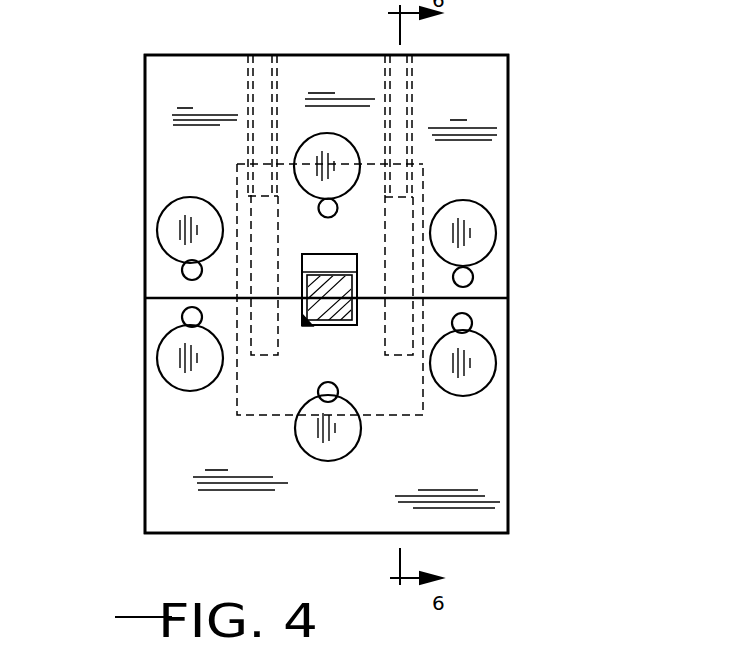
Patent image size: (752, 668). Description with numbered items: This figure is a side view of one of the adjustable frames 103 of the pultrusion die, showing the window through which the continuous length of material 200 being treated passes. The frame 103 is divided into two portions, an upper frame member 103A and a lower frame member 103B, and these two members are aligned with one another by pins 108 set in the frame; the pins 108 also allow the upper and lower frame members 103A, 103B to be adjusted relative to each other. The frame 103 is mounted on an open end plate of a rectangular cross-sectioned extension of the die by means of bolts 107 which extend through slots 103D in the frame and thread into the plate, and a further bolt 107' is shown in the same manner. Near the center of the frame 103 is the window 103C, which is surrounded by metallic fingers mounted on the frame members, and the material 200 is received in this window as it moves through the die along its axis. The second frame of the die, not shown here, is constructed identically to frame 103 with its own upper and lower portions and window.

The adjustable frame 103 is at (546, 124).
The upper frame member 103A is at (478, 82).
The lower frame member 103B is at (483, 430).
The window 103C is at (367, 240).
The slots 103D is at (318, 209).
The bolts 107 is at (335, 285).
The roller 107' is at (527, 218).
The pins 108 is at (239, 170).
The material 200 is at (302, 328).